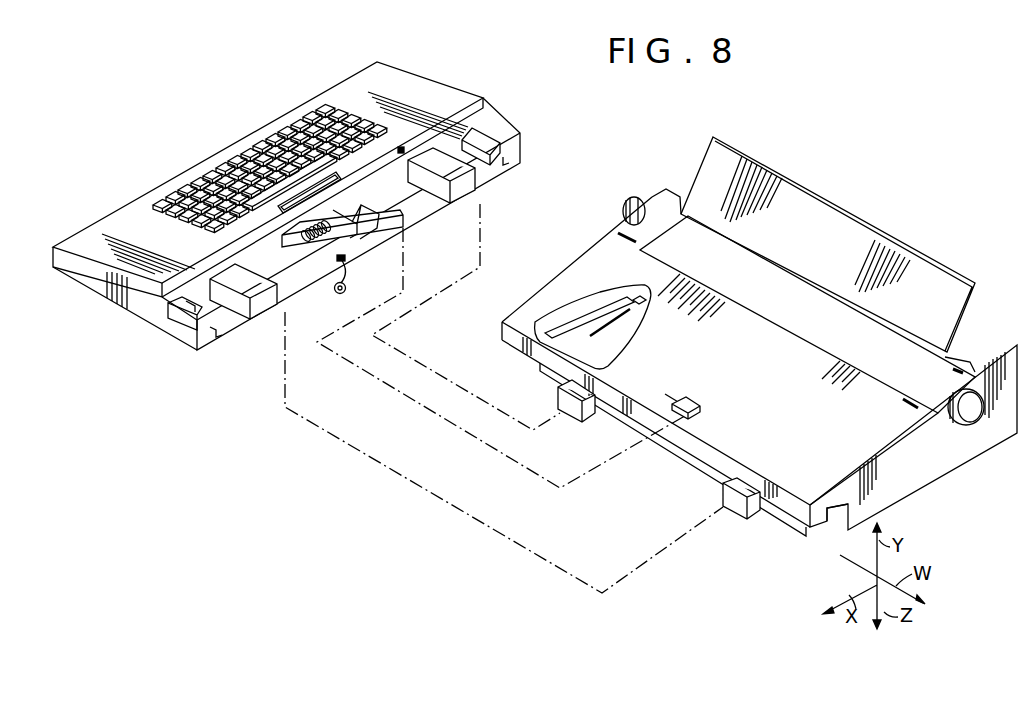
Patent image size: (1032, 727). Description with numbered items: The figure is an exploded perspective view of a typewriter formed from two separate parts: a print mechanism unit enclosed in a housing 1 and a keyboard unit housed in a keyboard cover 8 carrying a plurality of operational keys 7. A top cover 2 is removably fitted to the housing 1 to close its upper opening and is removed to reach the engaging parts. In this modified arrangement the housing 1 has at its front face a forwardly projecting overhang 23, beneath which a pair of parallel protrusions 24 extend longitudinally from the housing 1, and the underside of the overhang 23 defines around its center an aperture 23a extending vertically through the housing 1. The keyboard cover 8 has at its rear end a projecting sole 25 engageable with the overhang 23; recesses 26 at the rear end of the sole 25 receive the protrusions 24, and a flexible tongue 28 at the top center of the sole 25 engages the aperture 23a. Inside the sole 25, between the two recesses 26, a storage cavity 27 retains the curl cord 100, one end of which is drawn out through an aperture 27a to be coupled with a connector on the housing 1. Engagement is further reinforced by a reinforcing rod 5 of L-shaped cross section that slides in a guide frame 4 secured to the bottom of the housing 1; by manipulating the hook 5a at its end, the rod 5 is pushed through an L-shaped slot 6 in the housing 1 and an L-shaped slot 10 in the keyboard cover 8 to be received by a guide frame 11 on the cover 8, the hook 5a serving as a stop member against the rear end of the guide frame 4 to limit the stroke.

The housing 1 is at (938, 478).
The top cover 2 is at (885, 437).
The guide frame 4 is at (583, 323).
The reinforcing rod 5 is at (607, 318).
The hook 5a is at (647, 302).
The L-shaped slot 6 is at (830, 522).
The operational keys 7 is at (212, 166).
The keyboard cover 8 is at (417, 82).
The L-shaped slot 10 is at (215, 341).
The guide frame 11 is at (183, 320).
The overhang 23 is at (700, 460).
The aperture 23a is at (694, 421).
The protrusion 24 is at (592, 421).
The projecting sole 25 is at (520, 131).
The recess 26 is at (257, 310).
The storage cavity 27 is at (318, 265).
The aperture 27a is at (348, 259).
The flexible tongue 28 is at (352, 216).
The curl cord 100 is at (346, 284).